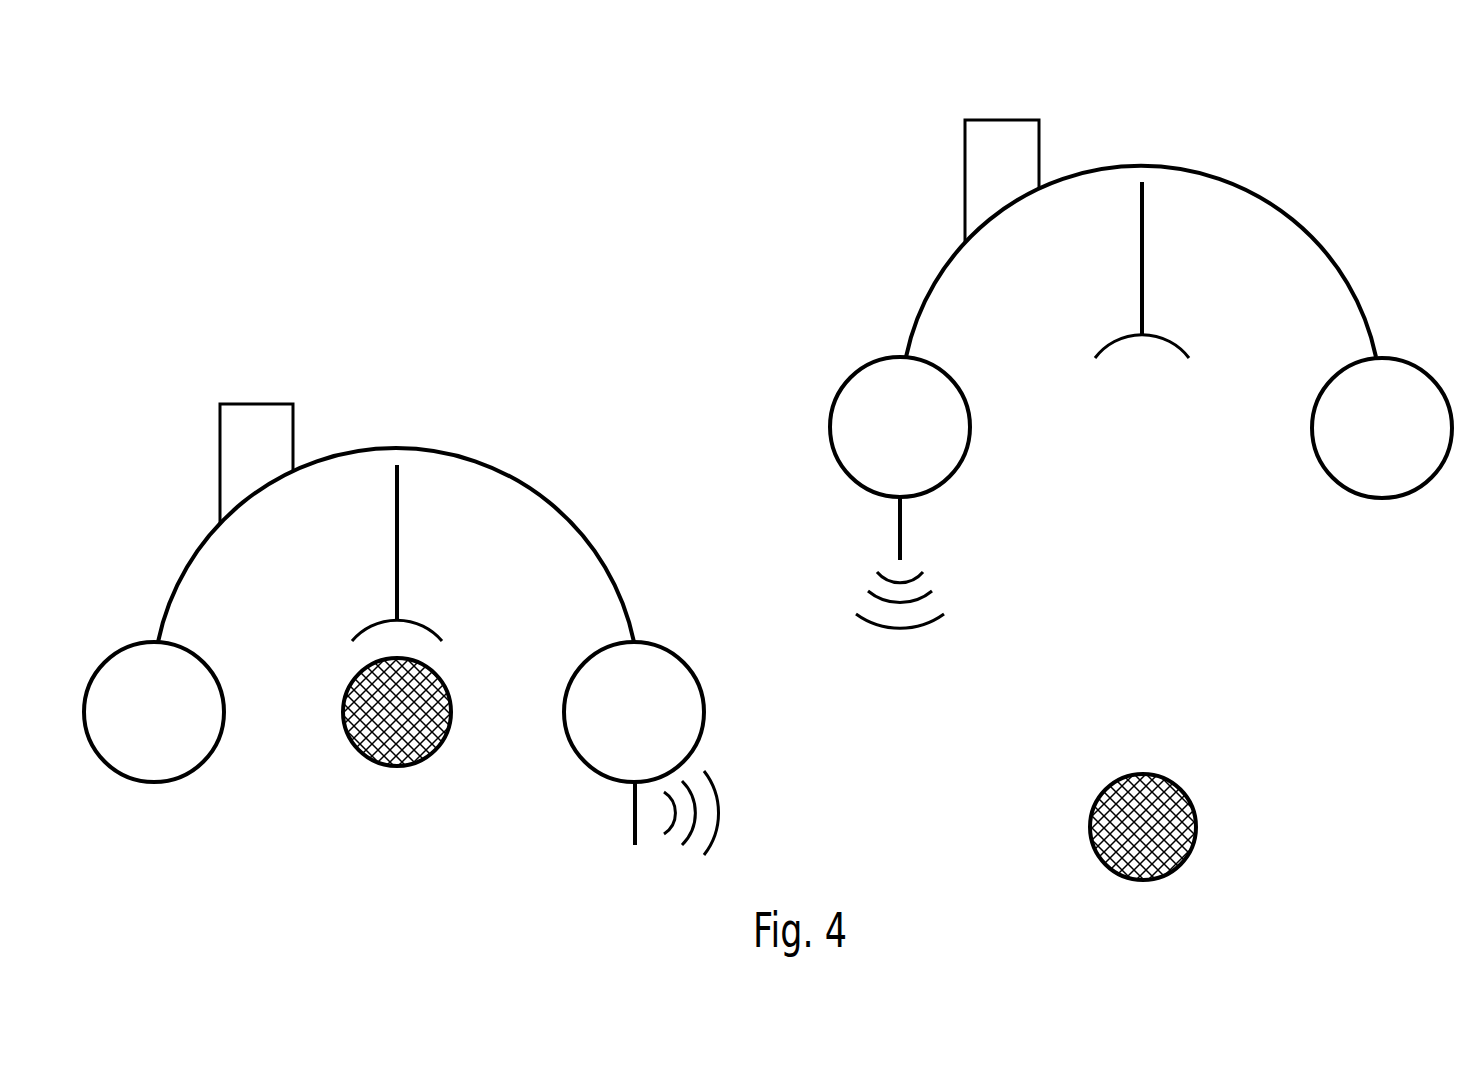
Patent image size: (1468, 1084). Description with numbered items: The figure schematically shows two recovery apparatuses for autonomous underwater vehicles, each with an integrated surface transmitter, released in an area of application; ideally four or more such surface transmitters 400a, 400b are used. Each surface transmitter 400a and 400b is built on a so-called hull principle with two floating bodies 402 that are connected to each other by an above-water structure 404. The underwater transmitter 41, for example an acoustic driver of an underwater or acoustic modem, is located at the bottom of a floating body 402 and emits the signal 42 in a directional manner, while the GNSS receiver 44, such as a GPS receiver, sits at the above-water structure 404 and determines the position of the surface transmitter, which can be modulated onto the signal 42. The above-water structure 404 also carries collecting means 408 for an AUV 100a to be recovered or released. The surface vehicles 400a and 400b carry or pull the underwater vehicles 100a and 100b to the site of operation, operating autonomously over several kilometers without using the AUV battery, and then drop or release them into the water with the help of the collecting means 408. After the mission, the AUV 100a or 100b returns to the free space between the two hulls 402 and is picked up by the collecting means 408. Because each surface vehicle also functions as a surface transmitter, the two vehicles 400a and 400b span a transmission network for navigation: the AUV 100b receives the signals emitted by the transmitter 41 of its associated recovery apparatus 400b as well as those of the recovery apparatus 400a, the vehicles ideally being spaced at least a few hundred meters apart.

The surface transmitter 400a is at (385, 485).
The surface transmitter 400b is at (1120, 165).
The floating body 402 is at (155, 783).
The above-water structure 404 is at (372, 450).
The collecting means 408 is at (398, 540).
The GNSS unit 44 is at (220, 462).
The underwater transmitter 41 is at (633, 812).
The signal 42 is at (676, 833).
The AUV 100a is at (400, 767).
The AUV 100b is at (1197, 824).